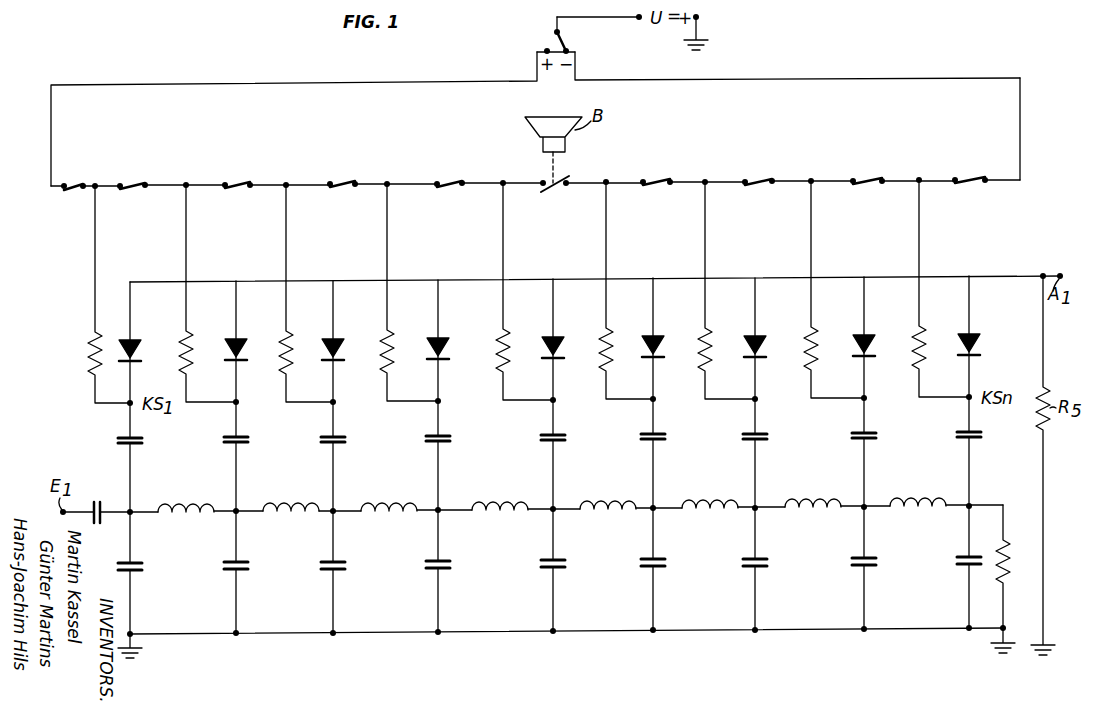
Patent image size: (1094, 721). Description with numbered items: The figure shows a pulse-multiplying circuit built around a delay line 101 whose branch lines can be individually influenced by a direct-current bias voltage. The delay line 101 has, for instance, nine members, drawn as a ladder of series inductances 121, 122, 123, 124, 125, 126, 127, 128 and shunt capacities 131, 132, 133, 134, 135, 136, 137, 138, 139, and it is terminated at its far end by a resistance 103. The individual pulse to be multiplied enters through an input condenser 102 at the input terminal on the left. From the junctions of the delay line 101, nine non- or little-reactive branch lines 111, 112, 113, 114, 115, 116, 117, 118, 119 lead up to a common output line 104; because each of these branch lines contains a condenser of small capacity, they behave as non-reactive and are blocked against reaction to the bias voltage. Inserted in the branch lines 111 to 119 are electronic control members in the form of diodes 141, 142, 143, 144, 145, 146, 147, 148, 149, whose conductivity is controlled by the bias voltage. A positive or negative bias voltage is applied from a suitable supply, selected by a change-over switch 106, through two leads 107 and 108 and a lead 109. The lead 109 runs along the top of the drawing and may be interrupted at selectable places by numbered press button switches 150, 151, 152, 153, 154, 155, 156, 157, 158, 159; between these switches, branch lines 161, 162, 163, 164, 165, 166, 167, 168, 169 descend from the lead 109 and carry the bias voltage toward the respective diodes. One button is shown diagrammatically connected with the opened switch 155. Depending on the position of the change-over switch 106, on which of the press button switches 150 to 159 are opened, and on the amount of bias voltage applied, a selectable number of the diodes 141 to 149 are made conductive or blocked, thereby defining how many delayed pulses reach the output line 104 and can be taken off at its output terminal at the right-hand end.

The delay line 101 is at (516, 618).
The input condenser 102 is at (101, 520).
The resistance 103 is at (1020, 536).
The output line 104 is at (670, 277).
The change-over switch 106 is at (542, 44).
The lead 107 is at (330, 84).
The lead 108 is at (854, 79).
The lead 109 is at (1020, 114).
The branch line 111 is at (132, 462).
The branch line 112 is at (238, 461).
The branch line 113 is at (335, 461).
The branch line 114 is at (440, 460).
The branch line 115 is at (555, 459).
The branch line 116 is at (655, 458).
The branch line 117 is at (757, 458).
The branch line 118 is at (866, 457).
The branch line 119 is at (971, 456).
The inductance 121 is at (170, 514).
The inductance 122 is at (275, 513).
The inductance 123 is at (373, 513).
The inductance 124 is at (484, 512).
The inductance 125 is at (592, 511).
The inductance 126 is at (694, 510).
The inductance 127 is at (797, 509).
The inductance 128 is at (902, 508).
The capacity 131 is at (134, 572).
The capacity 132 is at (240, 571).
The capacity 133 is at (337, 571).
The capacity 134 is at (442, 564).
The capacity 135 is at (557, 569).
The capacity 136 is at (657, 568).
The capacity 137 is at (759, 568).
The capacity 138 is at (868, 561).
The capacity 139 is at (963, 561).
The diode 141 is at (134, 344).
The diode 142 is at (240, 343).
The diode 143 is at (337, 343).
The diode 144 is at (442, 342).
The diode 145 is at (557, 341).
The diode 146 is at (657, 340).
The diode 147 is at (759, 340).
The diode 148 is at (868, 339).
The diode 149 is at (973, 338).
The press button switch 150 is at (72, 193).
The press button switch 151 is at (128, 182).
The press button switch 152 is at (243, 180).
The press button switch 153 is at (345, 179).
The press button switch 154 is at (452, 176).
The press button switch 155 is at (560, 190).
The press button switch 156 is at (659, 174).
The press button switch 157 is at (759, 173).
The press button switch 158 is at (867, 173).
The press button switch 159 is at (969, 173).
The branch line 161 is at (97, 238).
The branch line 162 is at (188, 237).
The branch line 163 is at (288, 237).
The branch line 164 is at (389, 236).
The branch line 165 is at (505, 235).
The branch line 166 is at (608, 234).
The branch line 167 is at (707, 234).
The branch line 168 is at (813, 233).
The branch line 169 is at (921, 232).